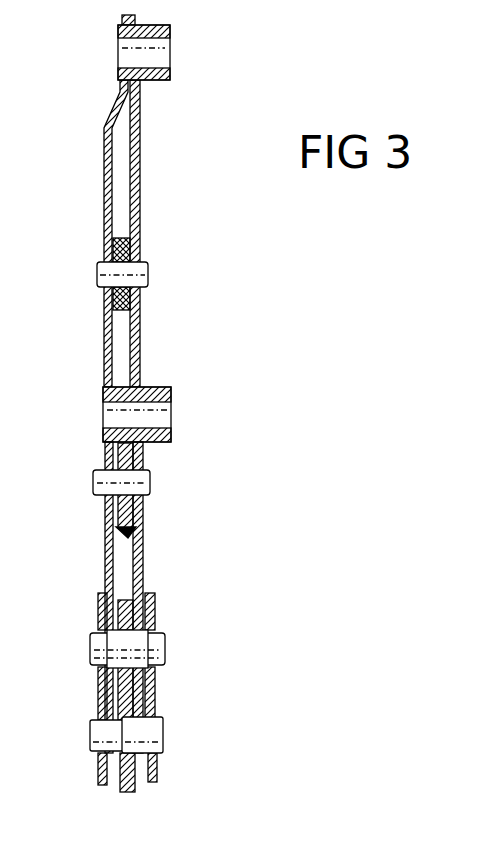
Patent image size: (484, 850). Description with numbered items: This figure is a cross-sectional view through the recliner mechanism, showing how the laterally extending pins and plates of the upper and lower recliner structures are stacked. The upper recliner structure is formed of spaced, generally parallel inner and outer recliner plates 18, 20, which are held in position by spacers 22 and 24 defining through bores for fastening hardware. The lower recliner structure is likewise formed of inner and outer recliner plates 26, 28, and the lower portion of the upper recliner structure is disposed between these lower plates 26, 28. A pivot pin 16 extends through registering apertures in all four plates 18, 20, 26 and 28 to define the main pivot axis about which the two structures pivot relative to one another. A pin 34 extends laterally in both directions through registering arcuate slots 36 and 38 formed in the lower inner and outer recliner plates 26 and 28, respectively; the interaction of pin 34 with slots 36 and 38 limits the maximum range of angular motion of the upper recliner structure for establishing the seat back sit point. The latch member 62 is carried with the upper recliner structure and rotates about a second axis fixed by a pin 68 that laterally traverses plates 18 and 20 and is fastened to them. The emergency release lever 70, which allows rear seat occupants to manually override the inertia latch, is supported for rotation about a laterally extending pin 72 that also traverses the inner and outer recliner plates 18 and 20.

The pivot pin 16 is at (165, 645).
The inner recliner plate 18 is at (140, 158).
The outer recliner plate 20 is at (103, 157).
The spacer 22 is at (170, 27).
The spacer 24 is at (172, 388).
The inner recliner plate 26 is at (153, 617).
The outer recliner plate 28 is at (100, 612).
The pin 34 is at (162, 742).
The arcuate slot 36 is at (153, 718).
The arcuate slot 38 is at (92, 722).
The latch member 62 is at (150, 532).
The pin 68 is at (100, 490).
The emergency release lever 70 is at (103, 312).
The pin 72 is at (150, 268).